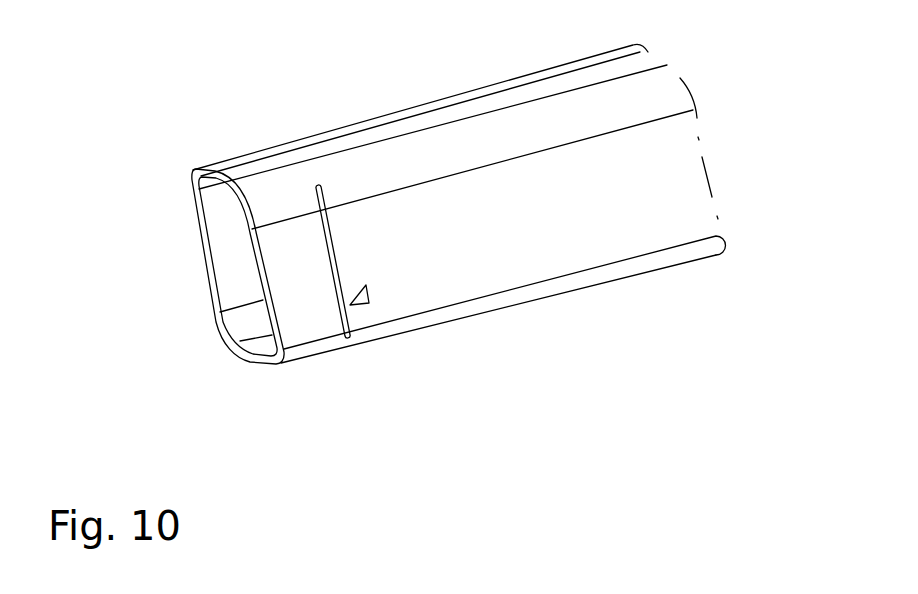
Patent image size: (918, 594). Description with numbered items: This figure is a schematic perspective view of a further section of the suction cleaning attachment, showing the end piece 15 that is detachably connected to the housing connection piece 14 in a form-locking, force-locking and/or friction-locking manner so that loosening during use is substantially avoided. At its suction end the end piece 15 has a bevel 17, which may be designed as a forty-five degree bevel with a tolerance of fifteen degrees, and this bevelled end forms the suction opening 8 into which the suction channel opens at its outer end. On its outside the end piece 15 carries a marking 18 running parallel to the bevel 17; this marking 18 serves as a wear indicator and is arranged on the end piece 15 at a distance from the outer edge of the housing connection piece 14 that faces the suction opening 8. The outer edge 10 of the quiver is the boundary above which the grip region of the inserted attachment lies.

The suction opening 8 is at (209, 277).
The outer edge of quiver 10 is at (198, 168).
The housing connection piece 14 is at (598, 343).
The end piece 15 is at (340, 398).
The bevel 17 is at (280, 237).
The marking 18 is at (333, 232).